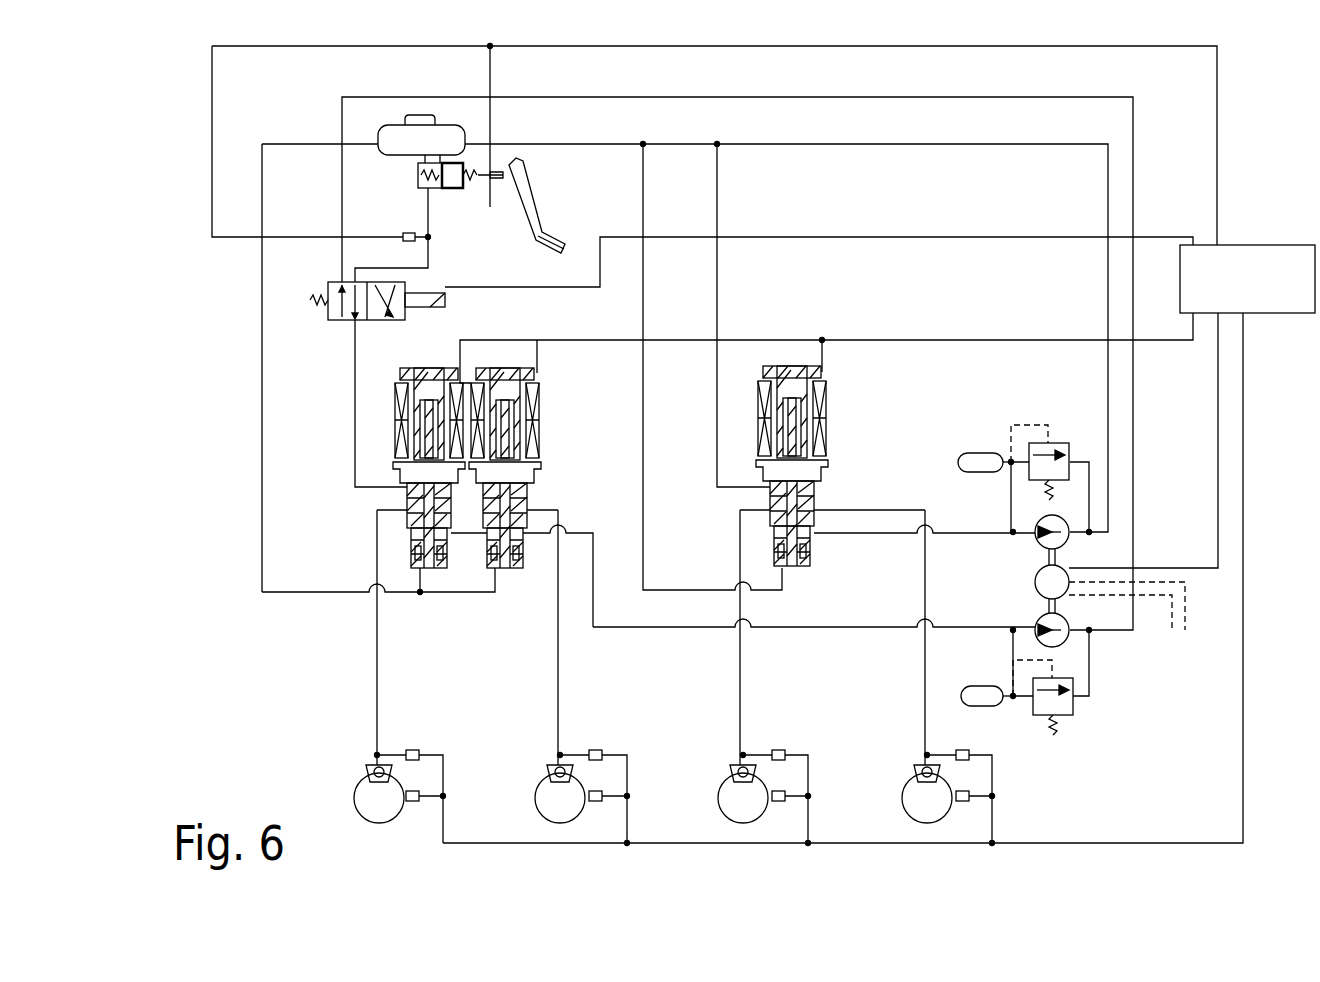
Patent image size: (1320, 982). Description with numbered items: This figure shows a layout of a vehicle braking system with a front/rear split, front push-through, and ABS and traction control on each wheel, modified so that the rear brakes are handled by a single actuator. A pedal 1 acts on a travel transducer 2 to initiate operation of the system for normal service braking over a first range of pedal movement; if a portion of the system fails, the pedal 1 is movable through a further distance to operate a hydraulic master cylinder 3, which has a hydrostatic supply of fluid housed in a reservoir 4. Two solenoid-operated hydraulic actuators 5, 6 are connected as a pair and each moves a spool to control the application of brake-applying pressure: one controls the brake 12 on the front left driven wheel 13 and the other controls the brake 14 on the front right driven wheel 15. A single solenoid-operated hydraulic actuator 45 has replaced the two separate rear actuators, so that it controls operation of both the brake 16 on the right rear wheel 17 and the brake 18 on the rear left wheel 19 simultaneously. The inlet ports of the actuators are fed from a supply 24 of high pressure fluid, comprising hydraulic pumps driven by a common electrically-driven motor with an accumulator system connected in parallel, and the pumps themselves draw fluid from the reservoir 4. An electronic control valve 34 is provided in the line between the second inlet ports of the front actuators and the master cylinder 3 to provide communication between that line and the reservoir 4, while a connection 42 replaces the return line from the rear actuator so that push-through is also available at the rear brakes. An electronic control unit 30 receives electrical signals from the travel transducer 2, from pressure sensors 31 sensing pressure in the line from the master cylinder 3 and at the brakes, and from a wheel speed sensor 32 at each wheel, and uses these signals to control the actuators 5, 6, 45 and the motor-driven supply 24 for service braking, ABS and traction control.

The pedal 1 is at (540, 222).
The travel transducer 2 is at (488, 145).
The hydraulic master cylinder 3 is at (418, 172).
The reservoir 4 is at (421, 118).
The solenoid-operated hydraulic actuator 5 is at (427, 372).
The solenoid-operated hydraulic actuator 6 is at (505, 368).
The brake 12 is at (370, 772).
The front left driven wheel 13 is at (366, 812).
The brake 14 is at (558, 770).
The front right driven wheel 15 is at (552, 822).
The brake 16 is at (923, 770).
The right rear wheel 17 is at (918, 822).
The brake 18 is at (740, 770).
The rear left wheel 19 is at (735, 822).
The supply of high pressure fluid 24 is at (1022, 583).
The electronic control unit 30 is at (1291, 313).
The pressure sensor 31 is at (405, 233).
The wheel speed sensor 32 is at (414, 803).
The electronic control valve 34 is at (333, 322).
The connection 42 is at (717, 452).
The single solenoid-operated hydraulic actuator 45 is at (805, 446).